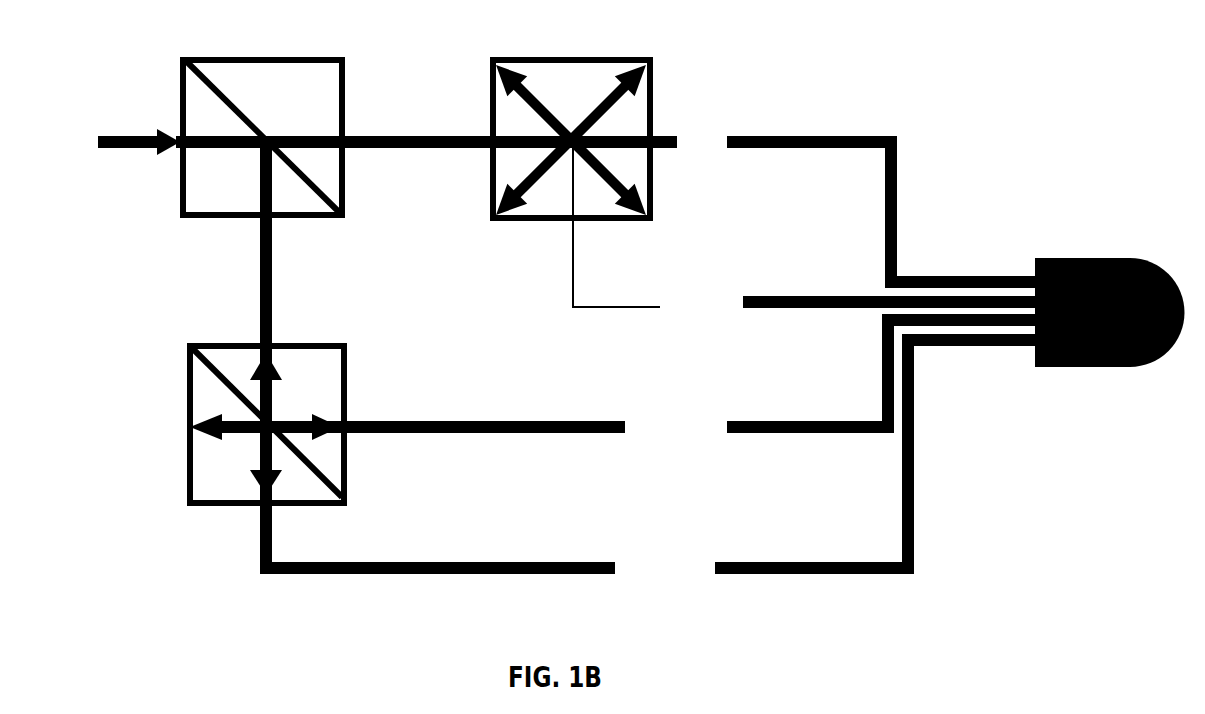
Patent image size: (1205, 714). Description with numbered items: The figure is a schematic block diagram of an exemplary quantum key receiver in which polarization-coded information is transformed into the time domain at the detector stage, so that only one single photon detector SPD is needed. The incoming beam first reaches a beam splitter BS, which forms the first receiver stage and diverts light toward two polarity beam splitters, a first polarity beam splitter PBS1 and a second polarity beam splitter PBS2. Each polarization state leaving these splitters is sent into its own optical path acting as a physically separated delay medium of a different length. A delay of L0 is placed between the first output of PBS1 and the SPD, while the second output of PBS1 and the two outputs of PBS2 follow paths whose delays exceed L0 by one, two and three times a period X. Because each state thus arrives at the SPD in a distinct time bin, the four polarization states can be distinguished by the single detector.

The beam splitter BS is at (262, 119).
The polarity beam splitter PBS #1 PBS1 is at (571, 119).
The polarity beam splitter PBS #2 PBS2 is at (348, 355).
The single photon detector SPD is at (1103, 287).
The delay L0 is at (606, 203).